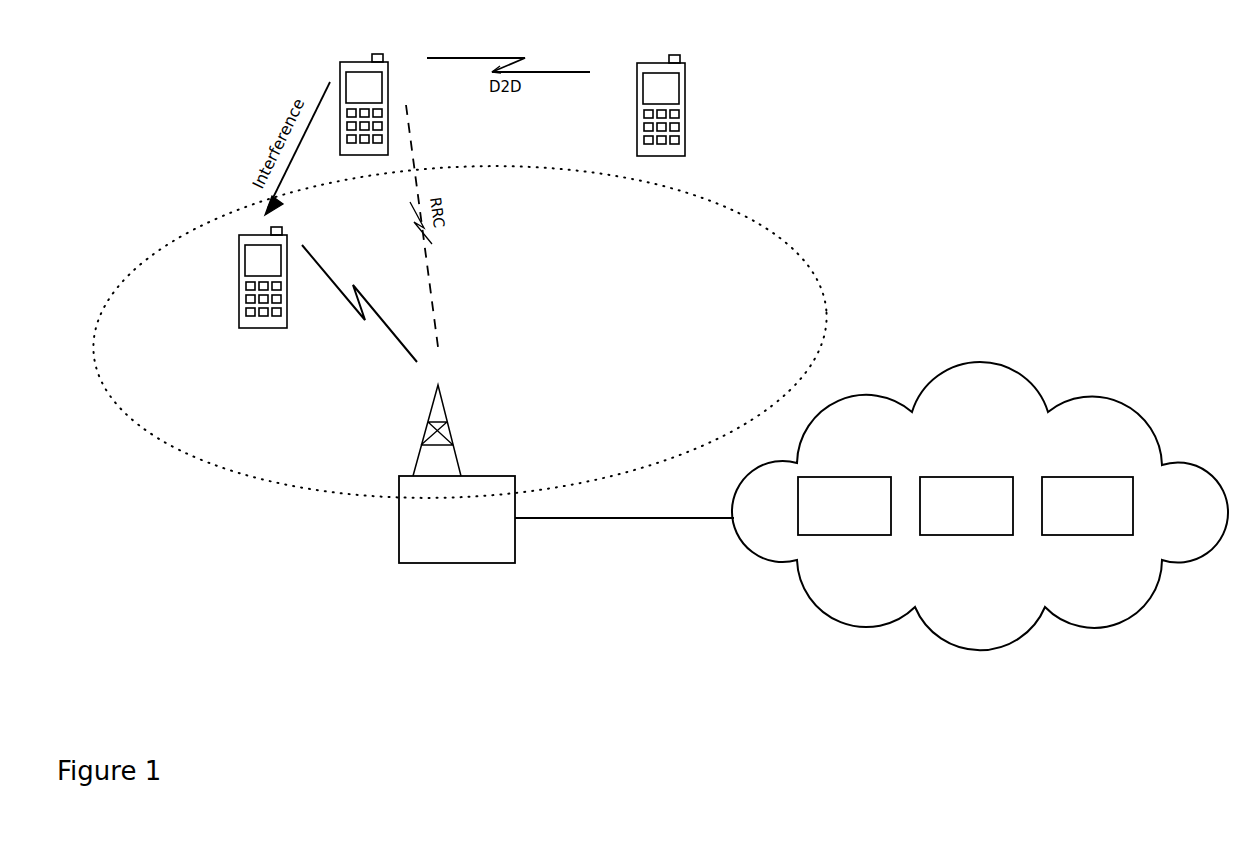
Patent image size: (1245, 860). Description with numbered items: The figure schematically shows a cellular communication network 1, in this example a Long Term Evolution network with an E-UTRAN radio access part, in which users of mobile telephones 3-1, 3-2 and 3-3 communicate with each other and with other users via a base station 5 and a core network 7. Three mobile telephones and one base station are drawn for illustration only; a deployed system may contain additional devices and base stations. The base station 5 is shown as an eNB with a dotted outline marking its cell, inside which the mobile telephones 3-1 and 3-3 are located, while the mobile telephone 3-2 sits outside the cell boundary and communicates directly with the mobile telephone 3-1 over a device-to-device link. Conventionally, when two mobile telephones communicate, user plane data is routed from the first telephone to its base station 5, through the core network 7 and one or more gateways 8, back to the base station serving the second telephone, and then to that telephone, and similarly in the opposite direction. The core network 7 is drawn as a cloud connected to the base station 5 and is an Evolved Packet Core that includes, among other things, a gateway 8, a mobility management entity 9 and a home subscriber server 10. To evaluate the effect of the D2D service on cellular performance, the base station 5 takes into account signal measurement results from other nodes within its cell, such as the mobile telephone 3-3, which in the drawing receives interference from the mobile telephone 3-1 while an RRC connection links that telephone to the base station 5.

The cellular communication network 1 is at (983, 210).
The mobile telephone 3-1 is at (360, 62).
The mobile telephone 3-2 is at (650, 63).
The mobile telephone 3-3 is at (240, 245).
The base station 5 is at (490, 476).
The core network 7 is at (1157, 428).
The gateway 8 is at (942, 478).
The mobility management entity 9 is at (821, 477).
The home subscriber server 10 is at (1065, 478).